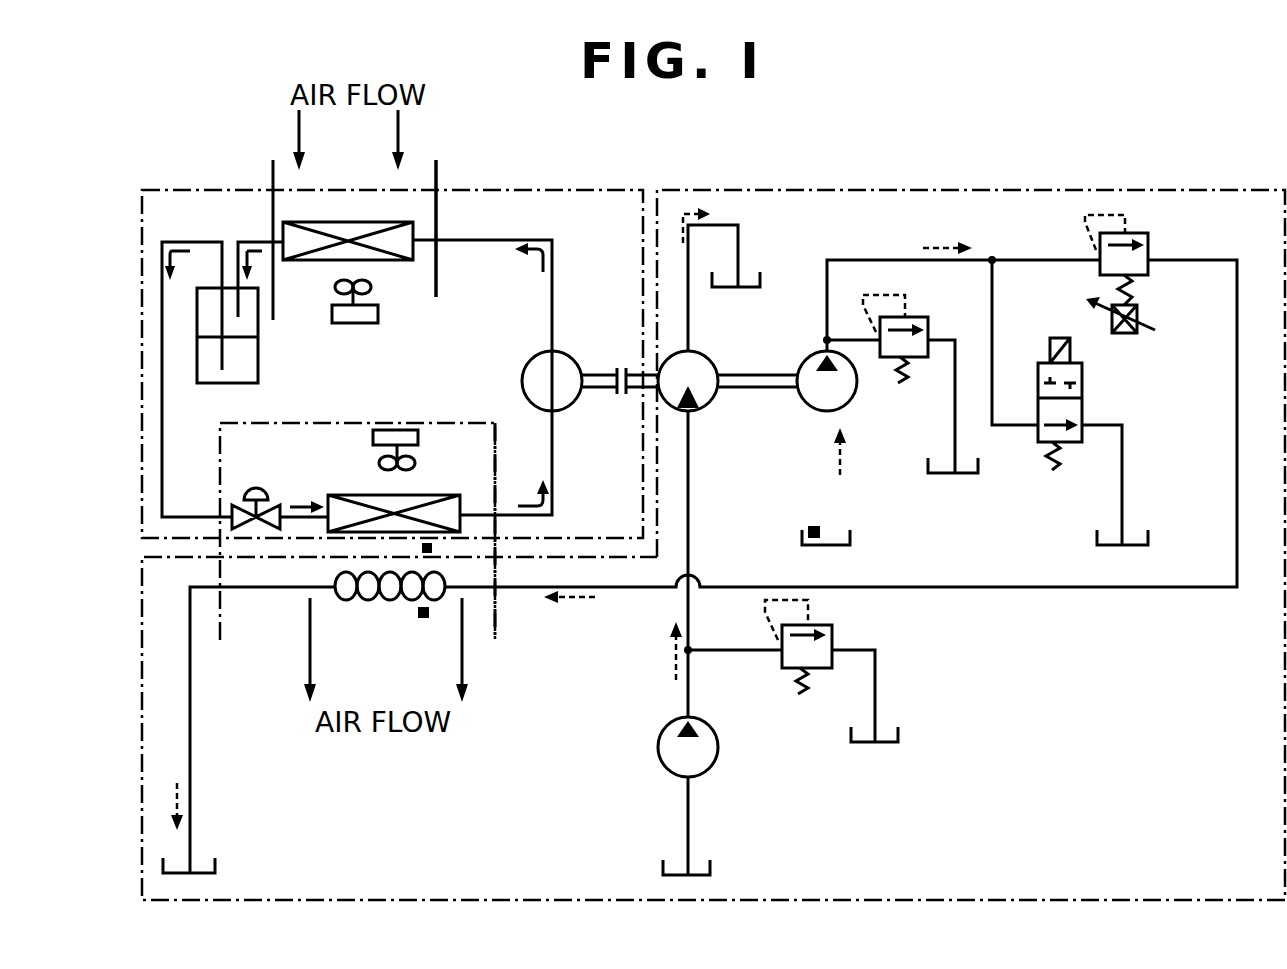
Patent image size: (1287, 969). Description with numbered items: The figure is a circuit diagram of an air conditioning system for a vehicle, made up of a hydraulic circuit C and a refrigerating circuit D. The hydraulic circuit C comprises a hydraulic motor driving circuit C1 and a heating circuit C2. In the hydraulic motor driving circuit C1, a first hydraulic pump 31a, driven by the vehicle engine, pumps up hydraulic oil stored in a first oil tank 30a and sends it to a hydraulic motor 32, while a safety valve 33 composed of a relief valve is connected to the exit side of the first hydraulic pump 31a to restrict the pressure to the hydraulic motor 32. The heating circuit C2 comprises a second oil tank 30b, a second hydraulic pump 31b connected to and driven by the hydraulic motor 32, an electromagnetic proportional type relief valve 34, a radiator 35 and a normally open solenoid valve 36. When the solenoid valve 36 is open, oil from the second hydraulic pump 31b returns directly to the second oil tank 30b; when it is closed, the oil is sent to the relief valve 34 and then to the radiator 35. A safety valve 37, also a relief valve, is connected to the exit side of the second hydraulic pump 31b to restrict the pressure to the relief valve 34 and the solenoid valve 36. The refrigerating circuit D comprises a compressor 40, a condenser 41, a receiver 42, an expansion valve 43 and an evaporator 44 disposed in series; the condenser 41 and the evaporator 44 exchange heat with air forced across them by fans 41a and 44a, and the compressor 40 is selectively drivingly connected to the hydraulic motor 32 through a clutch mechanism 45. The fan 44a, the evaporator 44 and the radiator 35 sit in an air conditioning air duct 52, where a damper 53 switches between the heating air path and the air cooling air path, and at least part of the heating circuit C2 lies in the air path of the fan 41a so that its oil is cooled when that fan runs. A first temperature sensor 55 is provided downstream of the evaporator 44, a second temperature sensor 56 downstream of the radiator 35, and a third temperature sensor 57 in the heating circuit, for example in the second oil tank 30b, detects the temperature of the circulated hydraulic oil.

The refrigerating circuit D is at (345, 188).
The hydraulic circuit C is at (943, 188).
The hydraulic motor driving circuit C1 is at (750, 266).
The heating circuit C2 is at (1200, 258).
The first oil tank 30a is at (745, 288).
The second oil tank 30b is at (850, 540).
The first hydraulic pump 31a is at (718, 752).
The second hydraulic pump 31b is at (855, 396).
The hydraulic motor 32 is at (712, 400).
The safety valve 33 is at (832, 633).
The electromagnetic proportional type relief valve 34 is at (1148, 236).
The radiator 35 is at (372, 600).
The solenoid valve 36 is at (1082, 398).
The safety valve 37 is at (945, 311).
The compressor 40 is at (573, 356).
The condenser 41 is at (415, 233).
The fan 41a is at (378, 314).
The receiver 42 is at (258, 368).
The expansion valve 43 is at (290, 470).
The evaporator 44 is at (442, 496).
The fan 44a is at (405, 430).
The clutch mechanism 45 is at (619, 396).
The air conditioning air duct 52 is at (497, 600).
The damper 53 is at (437, 183).
The first temperature sensor 55 is at (432, 548).
The second temperature sensor 56 is at (425, 618).
The third temperature sensor 57 is at (808, 528).